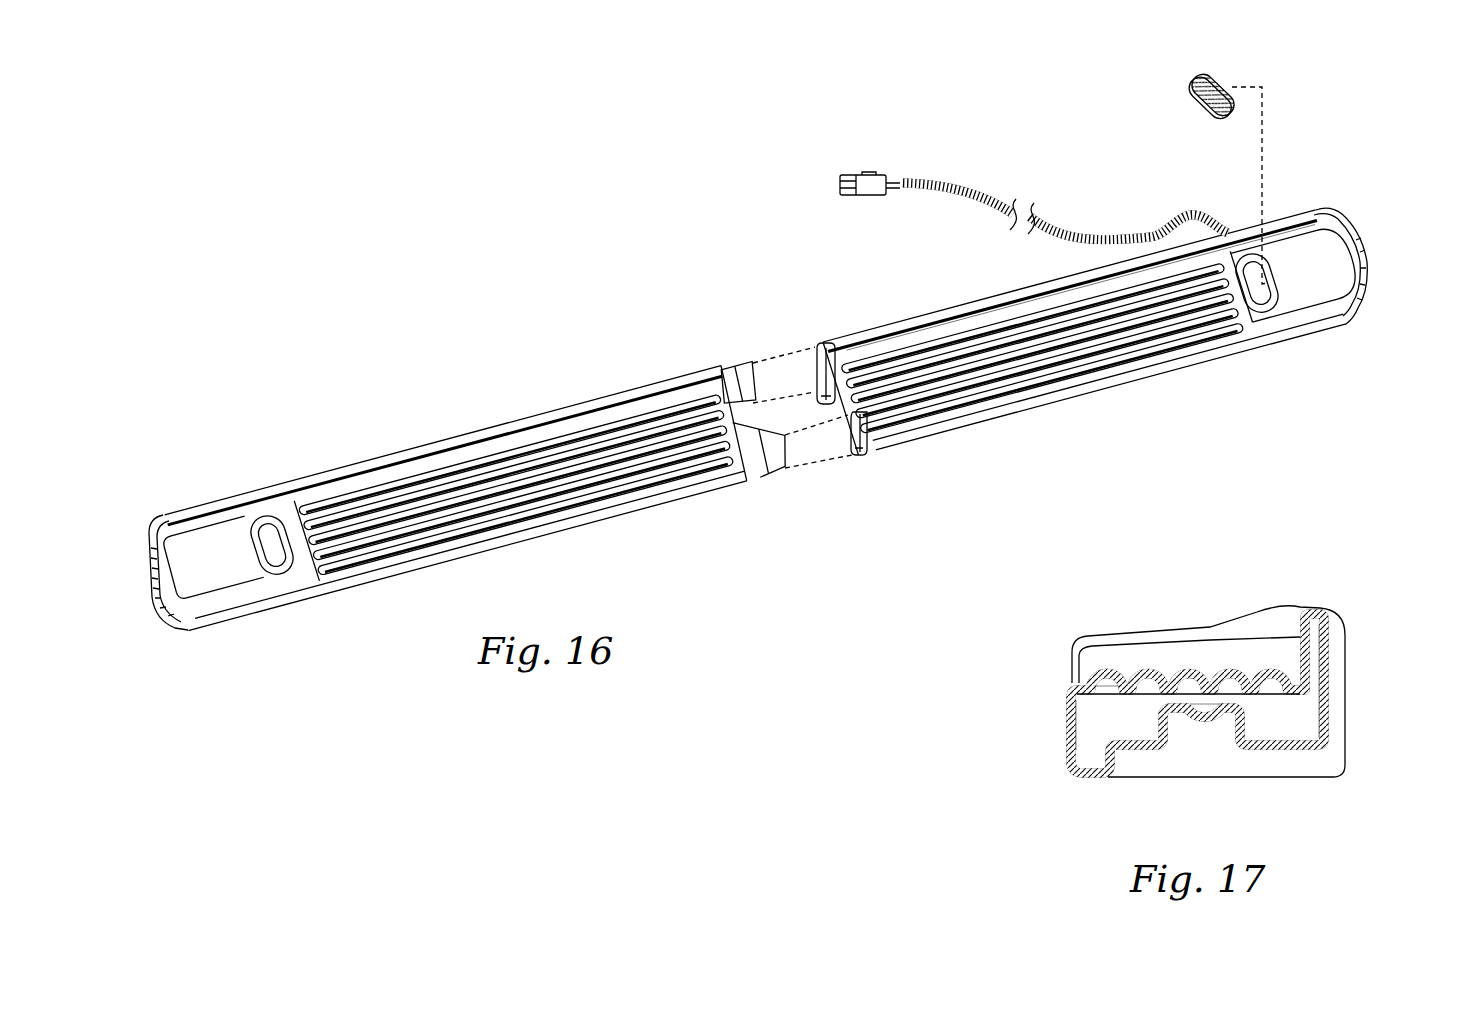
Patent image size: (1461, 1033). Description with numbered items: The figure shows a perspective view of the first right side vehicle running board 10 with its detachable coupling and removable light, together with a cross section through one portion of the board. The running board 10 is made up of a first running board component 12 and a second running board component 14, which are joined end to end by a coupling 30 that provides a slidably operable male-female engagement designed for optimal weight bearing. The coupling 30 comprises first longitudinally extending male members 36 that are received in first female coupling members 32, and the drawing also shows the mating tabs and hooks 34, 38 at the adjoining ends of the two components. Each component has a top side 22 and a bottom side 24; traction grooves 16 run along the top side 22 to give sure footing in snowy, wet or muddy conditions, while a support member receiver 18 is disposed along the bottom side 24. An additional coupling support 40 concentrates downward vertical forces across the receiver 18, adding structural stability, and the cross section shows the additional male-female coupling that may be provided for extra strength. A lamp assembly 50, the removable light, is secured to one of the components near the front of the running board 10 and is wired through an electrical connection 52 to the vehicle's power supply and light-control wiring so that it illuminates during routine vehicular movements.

In FIG. 16, the vehicle running board 10 is at (479, 228).
In FIG. 17, the vehicle running board 10 is at (1382, 543).
In FIG. 16, the first running board component 12 is at (668, 505).
In FIG. 16, the second running board component 14 is at (1052, 405).
In FIG. 16, the traction grooves 16 is at (658, 420).
In FIG. 17, the traction grooves 16 is at (1271, 675).
In FIG. 17, the support member receiver 18 is at (1212, 733).
In FIG. 16, the top side 22 is at (975, 405).
In FIG. 17, the top side 22 is at (1274, 604).
In FIG. 17, the bottom side 24 is at (1127, 778).
In FIG. 16, the coupling 30 is at (770, 336).
In FIG. 16, the first female coupling members 32 is at (861, 442).
In FIG. 17, the first female coupling members 32 is at (1097, 742).
In FIG. 16, the upper retention hook 34 is at (824, 345).
In FIG. 17, the upper retention hook 34 is at (1323, 658).
In FIG. 16, the first longitudinally extending male members 36 is at (772, 472).
In FIG. 16, the upper tab 38 is at (733, 368).
In FIG. 16, the additional coupling support 40 is at (856, 440).
In FIG. 17, the additional coupling support 40 is at (1205, 697).
In FIG. 16, the lamp assembly 50 is at (1193, 88).
In FIG. 16, the electrical connection 52 is at (963, 187).